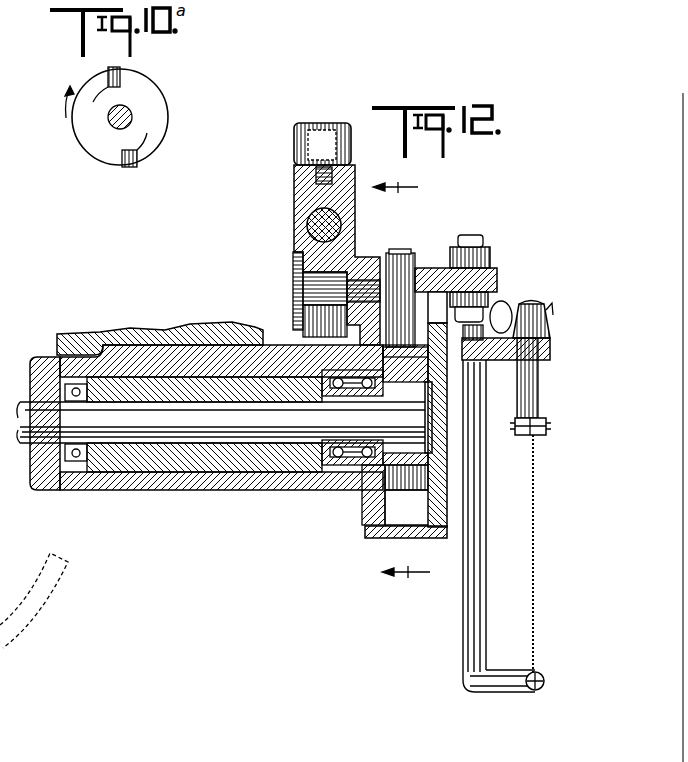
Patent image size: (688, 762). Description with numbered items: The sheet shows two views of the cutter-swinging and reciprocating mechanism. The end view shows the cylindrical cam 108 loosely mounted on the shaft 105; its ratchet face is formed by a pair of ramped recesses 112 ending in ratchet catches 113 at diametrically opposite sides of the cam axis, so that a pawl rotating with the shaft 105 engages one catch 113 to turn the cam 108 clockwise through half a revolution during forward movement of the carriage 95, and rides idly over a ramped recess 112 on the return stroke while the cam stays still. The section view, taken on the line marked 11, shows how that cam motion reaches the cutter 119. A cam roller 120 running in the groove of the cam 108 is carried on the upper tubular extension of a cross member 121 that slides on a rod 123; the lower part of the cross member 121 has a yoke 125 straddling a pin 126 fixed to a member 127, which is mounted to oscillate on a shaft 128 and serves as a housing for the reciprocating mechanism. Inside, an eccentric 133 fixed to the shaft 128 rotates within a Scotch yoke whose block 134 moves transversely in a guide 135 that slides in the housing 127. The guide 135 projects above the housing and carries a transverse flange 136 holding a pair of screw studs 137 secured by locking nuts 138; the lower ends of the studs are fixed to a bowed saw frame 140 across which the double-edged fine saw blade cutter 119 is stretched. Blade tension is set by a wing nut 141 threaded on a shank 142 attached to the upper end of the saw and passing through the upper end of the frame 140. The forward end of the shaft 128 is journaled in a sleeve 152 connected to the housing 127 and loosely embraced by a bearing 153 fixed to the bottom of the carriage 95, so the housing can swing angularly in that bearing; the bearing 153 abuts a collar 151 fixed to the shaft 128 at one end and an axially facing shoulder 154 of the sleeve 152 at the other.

In FIG. 12, the section line 11 is at (402, 379).
In FIG. 12, the carriage 95 is at (130, 328).
In FIG. 10A, the shaft 105 is at (112, 124).
In FIG. 10A, the cylindrical cam 108 is at (167, 113).
In FIG. 10A, the ramped recesses 112 is at (108, 77).
In FIG. 10A, the ratchet catches 113 is at (120, 72).
In FIG. 12, the cutter 119 is at (532, 579).
In FIG. 12, the cam roller 120 is at (300, 148).
In FIG. 12, the cross member 121 is at (297, 231).
In FIG. 12, the rod 123 is at (310, 222).
In FIG. 12, the yoke 125 is at (293, 263).
In FIG. 12, the pin 126 is at (310, 287).
In FIG. 12, the member (guide housing) 127 is at (380, 257).
In FIG. 12, the shaft 128 is at (220, 425).
In FIG. 12, the eccentric 133 is at (390, 398).
In FIG. 12, the block 134 is at (415, 470).
In FIG. 12, the guide 135 is at (418, 530).
In FIG. 12, the transverse flange 136 is at (428, 268).
In FIG. 12, the screw studs 137 is at (478, 236).
In FIG. 12, the locking nuts 138 is at (488, 298).
In FIG. 12, the bowed saw frame 140 is at (465, 603).
In FIG. 12, the wing nut 141 is at (531, 304).
In FIG. 12, the shank 142 is at (524, 393).
In FIG. 12, the collar 151 is at (49, 490).
In FIG. 12, the sleeve 152 is at (272, 455).
In FIG. 12, the bearing 153 is at (137, 477).
In FIG. 12, the axially facing shoulder 154 is at (323, 468).